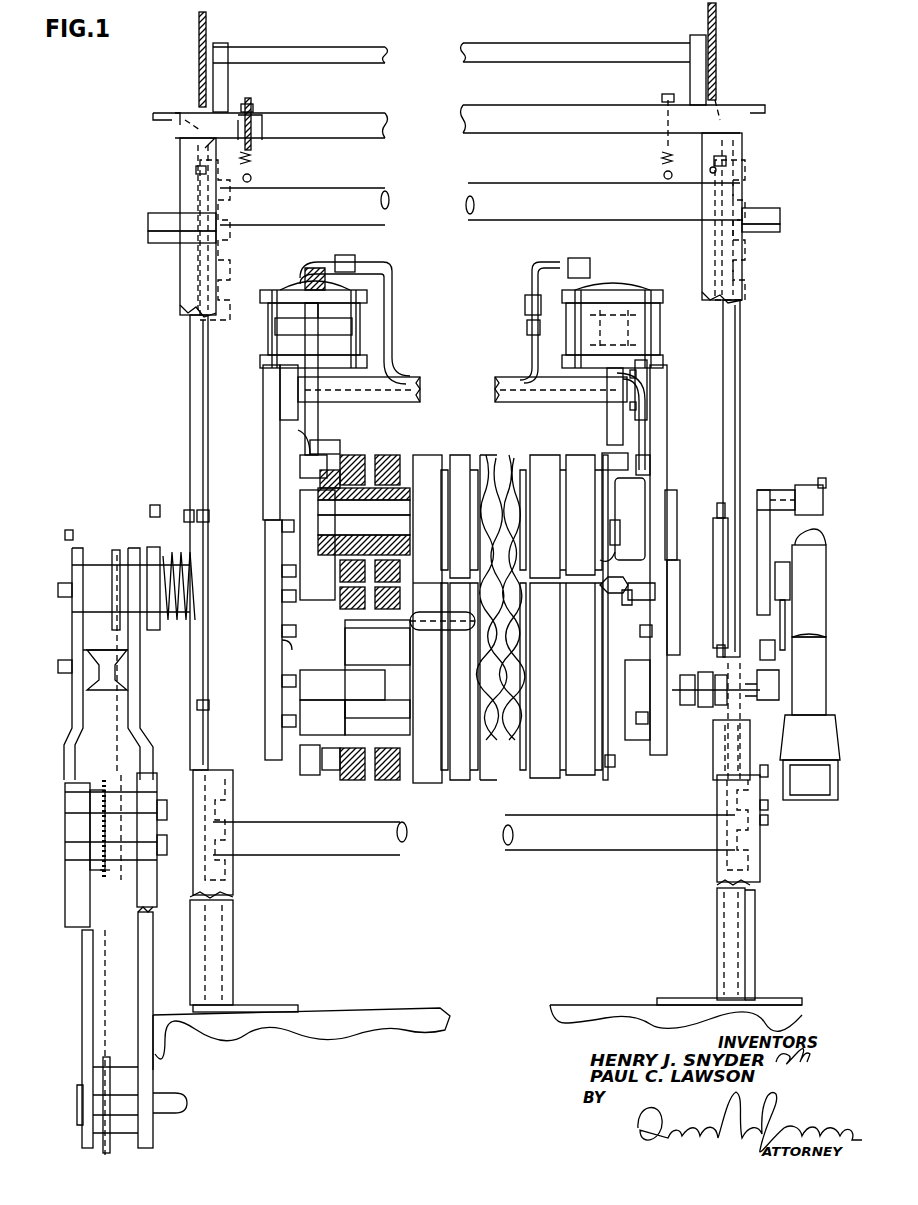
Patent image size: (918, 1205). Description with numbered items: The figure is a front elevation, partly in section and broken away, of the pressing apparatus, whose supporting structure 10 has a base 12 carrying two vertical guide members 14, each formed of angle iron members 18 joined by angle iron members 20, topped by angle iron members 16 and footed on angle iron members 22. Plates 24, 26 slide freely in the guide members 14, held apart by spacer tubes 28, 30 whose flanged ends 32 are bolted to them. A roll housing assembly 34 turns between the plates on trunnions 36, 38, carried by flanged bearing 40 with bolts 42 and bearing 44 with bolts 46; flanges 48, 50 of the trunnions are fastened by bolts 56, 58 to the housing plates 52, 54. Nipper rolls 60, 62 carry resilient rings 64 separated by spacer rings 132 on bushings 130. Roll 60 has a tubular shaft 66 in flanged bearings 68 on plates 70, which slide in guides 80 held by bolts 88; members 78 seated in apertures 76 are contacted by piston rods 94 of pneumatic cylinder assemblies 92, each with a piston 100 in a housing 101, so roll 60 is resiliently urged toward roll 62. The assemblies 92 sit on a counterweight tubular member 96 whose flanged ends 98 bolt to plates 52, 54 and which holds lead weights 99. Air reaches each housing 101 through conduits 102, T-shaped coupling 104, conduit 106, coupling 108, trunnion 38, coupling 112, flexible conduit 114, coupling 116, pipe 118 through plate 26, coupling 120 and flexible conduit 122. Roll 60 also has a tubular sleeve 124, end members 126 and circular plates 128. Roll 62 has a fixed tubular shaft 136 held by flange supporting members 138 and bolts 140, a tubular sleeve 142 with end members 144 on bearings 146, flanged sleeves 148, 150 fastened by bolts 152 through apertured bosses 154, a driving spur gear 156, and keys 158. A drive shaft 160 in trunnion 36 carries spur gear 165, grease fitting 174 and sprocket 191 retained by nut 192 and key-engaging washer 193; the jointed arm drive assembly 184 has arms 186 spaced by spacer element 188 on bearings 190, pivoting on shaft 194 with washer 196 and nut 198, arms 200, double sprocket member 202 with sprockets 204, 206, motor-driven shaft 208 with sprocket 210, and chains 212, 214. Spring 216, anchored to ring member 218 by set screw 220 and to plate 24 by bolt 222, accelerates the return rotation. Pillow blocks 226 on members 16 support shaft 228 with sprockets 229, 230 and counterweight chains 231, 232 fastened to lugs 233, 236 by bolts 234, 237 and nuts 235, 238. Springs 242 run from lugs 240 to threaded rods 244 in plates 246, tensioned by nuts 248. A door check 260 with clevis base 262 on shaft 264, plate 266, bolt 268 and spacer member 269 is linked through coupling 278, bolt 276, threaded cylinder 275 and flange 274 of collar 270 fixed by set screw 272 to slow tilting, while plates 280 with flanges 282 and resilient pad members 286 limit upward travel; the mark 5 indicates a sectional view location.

The supporting structure 10 is at (157, 104).
The base 12 is at (552, 1008).
The vertical guide members 14 is at (756, 178).
The angle iron members 16 is at (470, 128).
The angle iron members 18 is at (745, 883).
The angle iron members 20 is at (757, 112).
The angle iron members 22 is at (750, 965).
The plate 24 is at (190, 433).
The plate 26 is at (740, 384).
The spacer tube 28 is at (460, 183).
The spacer tube 30 is at (505, 850).
The flanged ends 32 is at (725, 790).
The roll housing assembly 34 is at (265, 407).
The trunnion 36 is at (233, 558).
The trunnion 38 is at (713, 530).
The flanged bearing 40 is at (260, 653).
The bolts 42 is at (210, 705).
The bearing 44 is at (713, 625).
The bolts 46 is at (718, 655).
The flange 48 is at (278, 650).
The flange 50 is at (675, 635).
The plate 52 is at (263, 463).
The plate 54 is at (660, 410).
The bolts 56 is at (280, 527).
The bolts 58 is at (672, 490).
The nipper roll 60 is at (434, 453).
The nipper roll 62 is at (474, 790).
The resilient rings 64 is at (448, 783).
The tubular shaft 66 is at (613, 555).
The flanged bearings 68 is at (630, 485).
The plates 70 is at (650, 455).
The apertures 76 is at (318, 465).
The members 78 is at (298, 431).
The guides 80 is at (645, 445).
The bolts 88 is at (625, 530).
The pneumatic cylinder assemblies 92 is at (635, 290).
The piston rods 94 is at (607, 435).
The counterweight tubular member 96 is at (500, 380).
The flanged ends 98 is at (647, 382).
The lead weights 99 is at (495, 393).
The piston 100 is at (275, 330).
The housing 101 is at (300, 290).
The conduits 102 is at (532, 268).
The T-shaped coupling 104 is at (525, 303).
The conduit 106 is at (655, 595).
The coupling 108 is at (625, 607).
The coupling 112 is at (790, 572).
The flexible conduit 114 is at (770, 622).
The coupling 116 is at (780, 690).
The pipe 118 is at (785, 725).
The coupling 120 is at (713, 765).
The flexible conduit 122 is at (675, 705).
The tubular sleeve 124 is at (410, 492).
The end members 126 is at (410, 545).
The circular plates 128 is at (330, 470).
The bushings 130 is at (410, 720).
The spacer rings 132 is at (375, 780).
The tubular shaft 136 is at (407, 688).
The flange supporting members 138 is at (636, 724).
The bolts 140 is at (640, 632).
The tubular sleeve 142 is at (405, 737).
The end members 144 is at (345, 718).
The bearings 146 is at (360, 655).
The flanged sleeve 148 is at (332, 700).
The flanged sleeve 150 is at (627, 710).
The bolts 152 is at (613, 767).
The apertured bosses 154 is at (328, 770).
The spur gear 156 is at (300, 775).
The keys 158 is at (425, 630).
The drive shaft 160 is at (282, 573).
The spur gear 165 is at (282, 600).
The grease fitting 174 is at (72, 547).
The jointed arm drive assembly 184 is at (143, 732).
The arms 186 is at (90, 640).
The spacer element 188 is at (100, 680).
The bearings 190 is at (110, 550).
The sprocket 191 is at (112, 586).
The nut 192 is at (65, 597).
The key-engaging washer 193 is at (68, 530).
The shaft 194 is at (65, 865).
The washer 196 is at (157, 800).
The nut 198 is at (165, 856).
The arms 200 is at (140, 978).
The double sprocket member 202 is at (110, 873).
The sprocket 204 is at (104, 785).
The sprocket 206 is at (120, 775).
The shaft 208 is at (185, 1115).
The sprocket 210 is at (120, 1145).
The chain 212 is at (105, 955).
The chain 214 is at (120, 698).
The spring 216 is at (180, 625).
The ring member 218 is at (155, 630).
The set screw 220 is at (150, 515).
The bolt 222 is at (184, 515).
The pillow blocks 226 is at (692, 38).
The shaft 228 is at (470, 64).
The sprocket 229 is at (198, 40).
The sprocket 230 is at (717, 25).
The chain 231 is at (195, 120).
The chain 232 is at (685, 105).
The lug 233 is at (205, 150).
The bolt 234 is at (195, 178).
The nut 235 is at (205, 170).
The lug 236 is at (725, 160).
The bolt 237 is at (728, 162).
The nut 238 is at (712, 175).
The lugs 240 is at (664, 172).
The springs 242 is at (660, 157).
The threaded rods 244 is at (665, 140).
The plates 246 is at (662, 92).
The nuts 248 is at (252, 105).
The door check 260 is at (805, 660).
The clevis base 262 is at (825, 790).
The shaft 264 is at (820, 800).
The plate 266 is at (765, 823).
The bolt 268 is at (766, 807).
The spacer member 269 is at (765, 775).
The collar 270 is at (765, 530).
The set screw 272 is at (785, 595).
The flange 274 is at (765, 490).
The threaded cylinder 275 is at (785, 495).
The bolt 276 is at (822, 488).
The coupling 278 is at (822, 475).
The plate 280 is at (742, 297).
The flange 282 is at (780, 230).
The resilient pad member 286 is at (780, 212).
The section line 5 is at (615, 590).